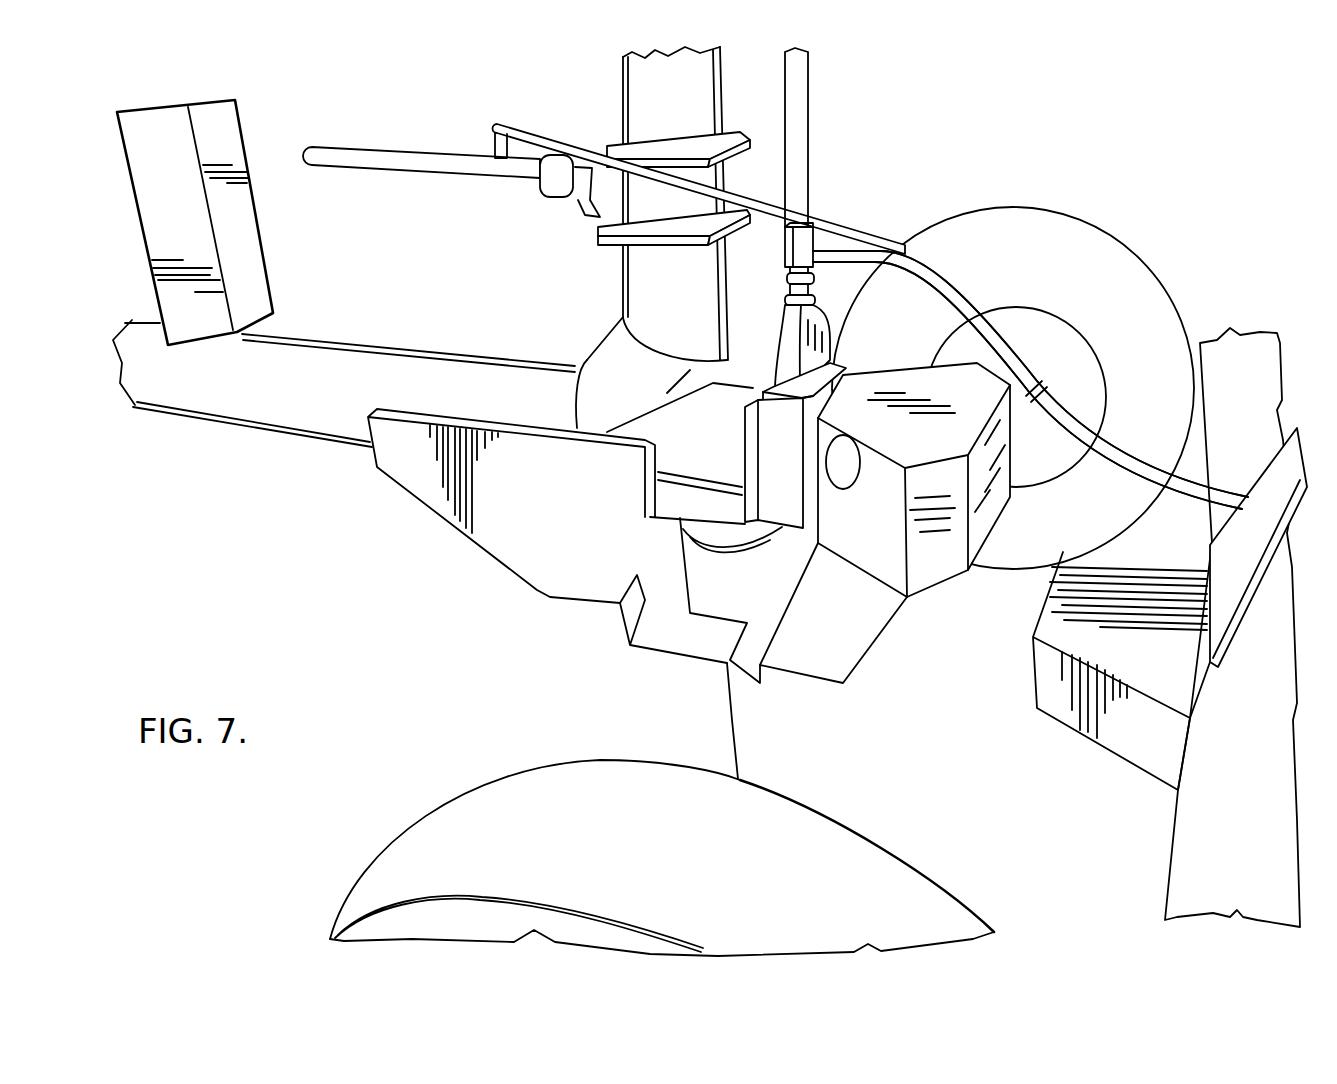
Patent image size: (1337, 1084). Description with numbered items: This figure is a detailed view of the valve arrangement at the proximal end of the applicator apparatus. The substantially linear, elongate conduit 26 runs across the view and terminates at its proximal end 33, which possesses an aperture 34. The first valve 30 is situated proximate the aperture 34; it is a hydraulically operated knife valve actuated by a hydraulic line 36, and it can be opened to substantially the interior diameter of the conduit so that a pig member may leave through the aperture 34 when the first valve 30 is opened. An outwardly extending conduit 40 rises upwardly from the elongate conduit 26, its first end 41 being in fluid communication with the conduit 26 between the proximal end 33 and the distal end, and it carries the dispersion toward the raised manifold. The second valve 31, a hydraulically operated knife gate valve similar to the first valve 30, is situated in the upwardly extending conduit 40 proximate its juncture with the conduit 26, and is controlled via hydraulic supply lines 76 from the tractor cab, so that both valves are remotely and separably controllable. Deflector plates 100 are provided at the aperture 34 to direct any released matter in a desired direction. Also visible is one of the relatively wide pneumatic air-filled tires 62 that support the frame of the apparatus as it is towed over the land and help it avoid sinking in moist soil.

The elongate conduit 26 is at (363, 347).
The first valve 30 is at (820, 338).
The second valve 31 is at (663, 197).
The proximal end 33 is at (688, 447).
The aperture 34 is at (842, 477).
The hydraulic line 36 is at (978, 283).
The outwardly extending conduit 40 is at (703, 80).
The first end 41 is at (597, 362).
The pneumatic air-filled tires 62 is at (434, 813).
The hydraulic supply lines 76 is at (783, 203).
The deflector plates 100 is at (247, 218).